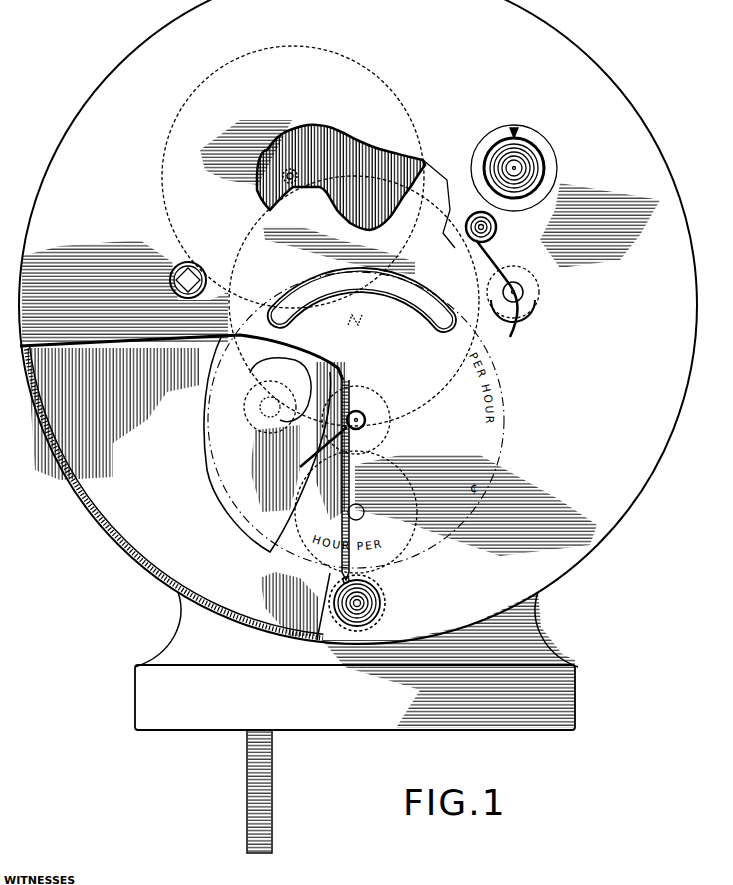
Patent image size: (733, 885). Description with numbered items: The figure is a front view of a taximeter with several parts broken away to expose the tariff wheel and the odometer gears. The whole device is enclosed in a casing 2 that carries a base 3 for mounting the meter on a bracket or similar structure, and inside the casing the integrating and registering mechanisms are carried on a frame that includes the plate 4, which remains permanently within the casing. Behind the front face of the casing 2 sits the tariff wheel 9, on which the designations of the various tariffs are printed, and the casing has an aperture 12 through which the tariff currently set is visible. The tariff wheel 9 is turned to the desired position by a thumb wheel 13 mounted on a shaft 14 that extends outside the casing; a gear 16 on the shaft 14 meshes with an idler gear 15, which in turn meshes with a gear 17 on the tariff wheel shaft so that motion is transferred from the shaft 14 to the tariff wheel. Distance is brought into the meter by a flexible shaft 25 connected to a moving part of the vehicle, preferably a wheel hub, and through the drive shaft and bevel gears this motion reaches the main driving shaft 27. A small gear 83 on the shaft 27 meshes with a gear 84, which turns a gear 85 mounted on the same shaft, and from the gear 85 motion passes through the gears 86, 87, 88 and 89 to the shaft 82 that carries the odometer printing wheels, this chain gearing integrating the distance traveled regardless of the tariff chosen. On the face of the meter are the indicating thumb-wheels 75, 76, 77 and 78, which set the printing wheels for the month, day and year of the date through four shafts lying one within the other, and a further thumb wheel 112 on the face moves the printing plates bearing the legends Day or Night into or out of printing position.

The casing 2 is at (80, 535).
The base 3 is at (355, 697).
The plate 4 is at (181, 369).
The tariff wheel 9 is at (215, 485).
The aperture 12 is at (308, 315).
The thumb wheel 13 is at (380, 596).
The shaft 14 is at (398, 598).
The idler gear 15 is at (356, 512).
The gear 16 is at (340, 584).
The gear 17 is at (332, 438).
The flexible shaft 25 is at (273, 772).
The shaft 27 is at (270, 412).
The indicating thumb-wheel 75 is at (505, 146).
The indicating thumb-wheel 76 is at (517, 148).
The indicating thumb-wheel 77 is at (525, 160).
The indicating thumb-wheel 78 is at (522, 168).
The shaft 82 is at (523, 285).
The small gear 83 is at (260, 420).
The gear 84 is at (280, 390).
The gear 85 is at (364, 318).
The gear 86 is at (424, 160).
The gear 87 is at (304, 163).
The gear 88 is at (470, 262).
The gear 89 is at (540, 297).
The thumb wheel 112 is at (498, 226).